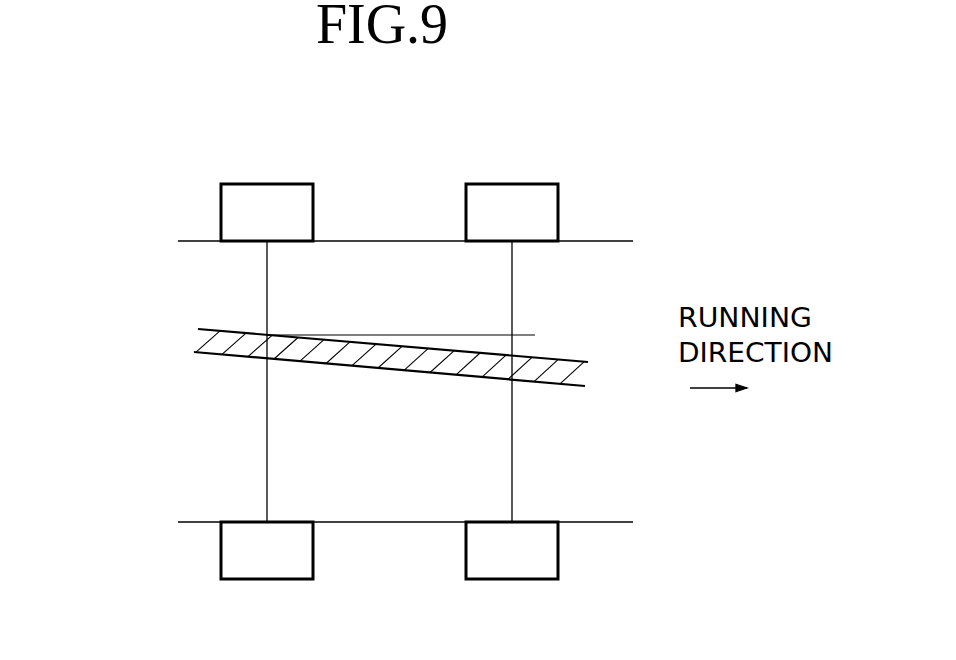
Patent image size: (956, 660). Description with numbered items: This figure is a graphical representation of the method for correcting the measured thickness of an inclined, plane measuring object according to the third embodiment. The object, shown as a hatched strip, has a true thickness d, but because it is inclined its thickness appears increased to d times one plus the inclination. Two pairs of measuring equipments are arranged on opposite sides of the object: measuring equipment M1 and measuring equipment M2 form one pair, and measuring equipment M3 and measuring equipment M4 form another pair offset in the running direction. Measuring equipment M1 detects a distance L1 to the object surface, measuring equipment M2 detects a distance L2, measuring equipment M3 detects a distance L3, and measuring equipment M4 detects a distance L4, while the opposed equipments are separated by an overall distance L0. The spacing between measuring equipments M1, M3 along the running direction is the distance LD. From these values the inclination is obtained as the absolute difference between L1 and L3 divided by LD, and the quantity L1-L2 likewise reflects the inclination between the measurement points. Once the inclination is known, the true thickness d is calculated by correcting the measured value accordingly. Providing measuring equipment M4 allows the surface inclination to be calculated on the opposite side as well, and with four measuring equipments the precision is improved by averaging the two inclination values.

The measuring equipment M1 is at (267, 212).
The measuring equipment M2 is at (267, 550).
The measuring equipment M3 is at (512, 212).
The measuring equipment M4 is at (512, 550).
The distance detected by measuring equipment M1 L1 is at (301, 241).
The distance detected by measuring equipment M2 L2 is at (250, 358).
The distance detected by measuring equipment M3 L3 is at (548, 241).
The distance detected by measuring equipment M4 L4 is at (463, 522).
The distance between measuring equipments L0 is at (618, 241).
The distance between measuring equipments M1, M3 LD is at (512, 478).
The true thickness d is at (188, 350).
The difference between detected distances L1 and L2 L1-L2 is at (531, 387).